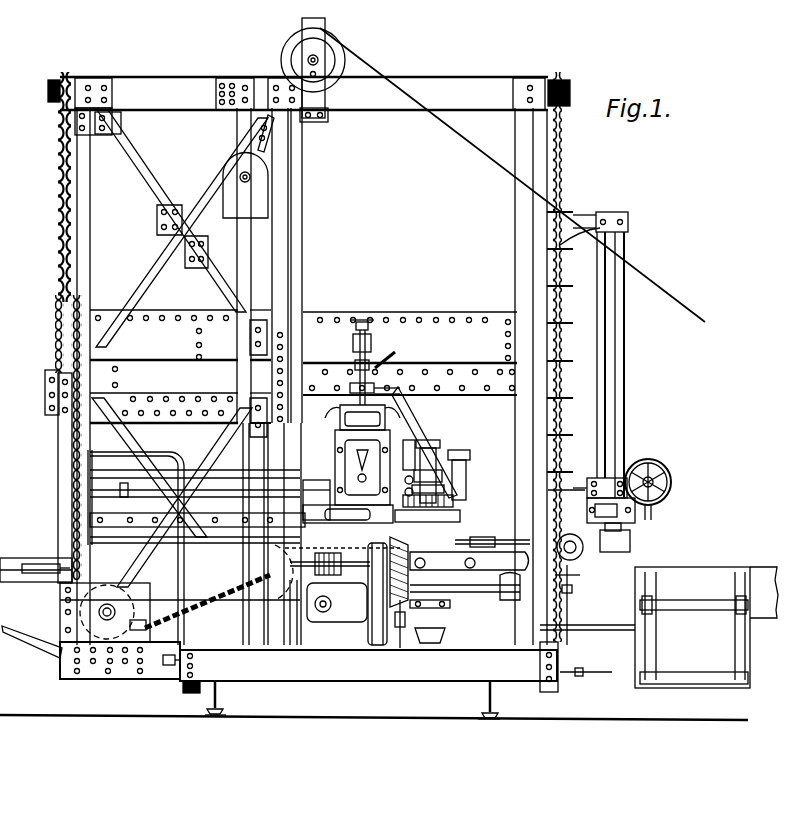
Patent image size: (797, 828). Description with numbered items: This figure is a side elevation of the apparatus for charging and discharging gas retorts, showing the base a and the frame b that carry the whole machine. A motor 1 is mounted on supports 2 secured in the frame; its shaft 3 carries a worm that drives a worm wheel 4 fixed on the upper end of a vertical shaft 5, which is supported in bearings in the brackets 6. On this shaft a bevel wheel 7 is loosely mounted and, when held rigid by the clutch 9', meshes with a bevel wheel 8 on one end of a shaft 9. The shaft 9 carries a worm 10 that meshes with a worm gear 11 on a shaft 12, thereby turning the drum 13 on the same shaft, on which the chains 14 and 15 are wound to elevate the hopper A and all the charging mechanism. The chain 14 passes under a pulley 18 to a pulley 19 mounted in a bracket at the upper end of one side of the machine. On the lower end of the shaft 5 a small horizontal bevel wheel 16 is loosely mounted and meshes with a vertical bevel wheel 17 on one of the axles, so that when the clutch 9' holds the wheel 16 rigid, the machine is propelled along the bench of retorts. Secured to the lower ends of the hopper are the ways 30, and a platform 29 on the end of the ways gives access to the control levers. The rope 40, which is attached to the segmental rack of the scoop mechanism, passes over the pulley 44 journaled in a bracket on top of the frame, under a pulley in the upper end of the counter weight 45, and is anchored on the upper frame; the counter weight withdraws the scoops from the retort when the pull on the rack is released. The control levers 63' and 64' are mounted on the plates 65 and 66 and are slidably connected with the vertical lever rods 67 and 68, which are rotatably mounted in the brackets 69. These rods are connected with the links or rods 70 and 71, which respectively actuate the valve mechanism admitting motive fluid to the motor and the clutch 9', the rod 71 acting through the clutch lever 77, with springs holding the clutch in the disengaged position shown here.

The motor 1 is at (391, 412).
The supports 2 is at (196, 476).
The shaft 3 is at (458, 500).
The worm wheel 4 is at (466, 508).
The shaft 5 is at (448, 612).
The brackets 6 is at (480, 575).
The bevel wheel 7 is at (385, 548).
The bevel wheel 8 is at (396, 581).
The shaft 9 is at (337, 597).
The clutch 9' is at (503, 587).
The worm 10 is at (330, 556).
The worm gear 11 is at (313, 577).
The shaft 12 is at (323, 608).
The drum 13 is at (350, 640).
The chain 14 is at (200, 602).
The chain 15 is at (396, 630).
The bevel wheel 16 is at (428, 645).
The bevel wheel 17 is at (444, 683).
The pulley 18 is at (80, 615).
The pulley 19 is at (55, 104).
The platform 29 is at (748, 660).
The ways 30 is at (762, 580).
The rope 40 is at (468, 142).
The pulley 44 is at (290, 52).
The counter weight 45 is at (223, 177).
The lever 63' is at (627, 507).
The lever 64' is at (569, 467).
The plate 65 is at (630, 548).
The plate 66 is at (632, 470).
The lever rod 67 is at (626, 395).
The lever rod 68 is at (600, 380).
The brackets 69 is at (610, 212).
The link 70 is at (587, 620).
The rod 71 is at (569, 538).
The clutch lever 77 is at (509, 552).
The hopper A is at (315, 250).
The base a is at (309, 667).
The frame b is at (92, 250).